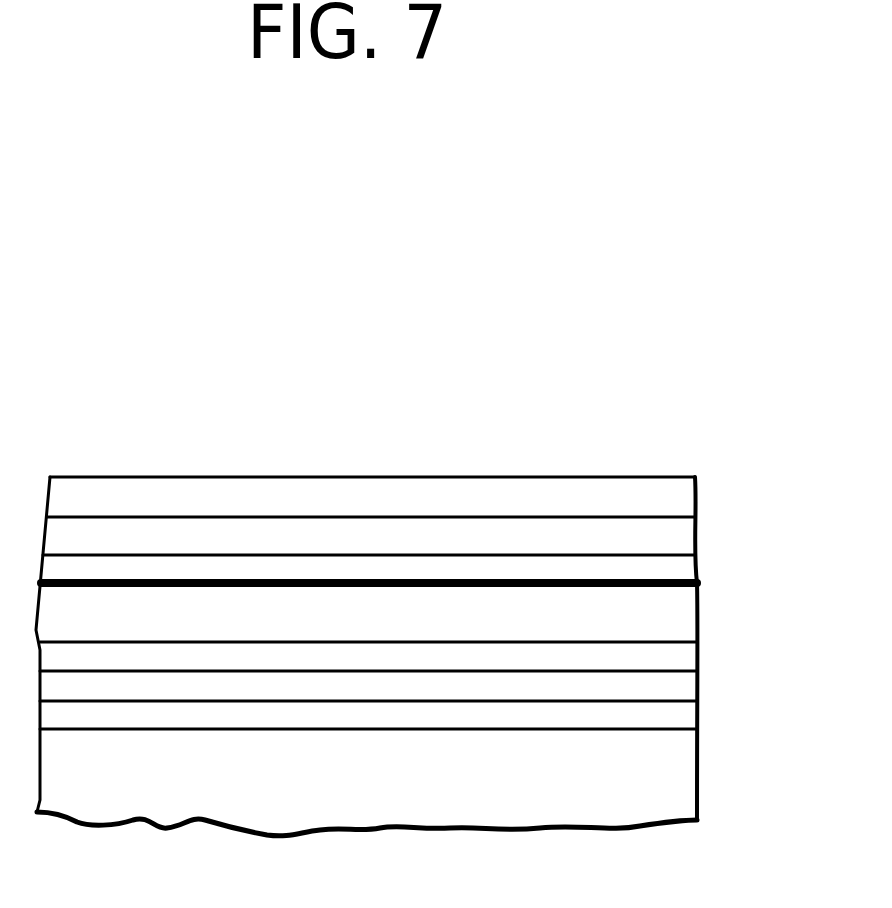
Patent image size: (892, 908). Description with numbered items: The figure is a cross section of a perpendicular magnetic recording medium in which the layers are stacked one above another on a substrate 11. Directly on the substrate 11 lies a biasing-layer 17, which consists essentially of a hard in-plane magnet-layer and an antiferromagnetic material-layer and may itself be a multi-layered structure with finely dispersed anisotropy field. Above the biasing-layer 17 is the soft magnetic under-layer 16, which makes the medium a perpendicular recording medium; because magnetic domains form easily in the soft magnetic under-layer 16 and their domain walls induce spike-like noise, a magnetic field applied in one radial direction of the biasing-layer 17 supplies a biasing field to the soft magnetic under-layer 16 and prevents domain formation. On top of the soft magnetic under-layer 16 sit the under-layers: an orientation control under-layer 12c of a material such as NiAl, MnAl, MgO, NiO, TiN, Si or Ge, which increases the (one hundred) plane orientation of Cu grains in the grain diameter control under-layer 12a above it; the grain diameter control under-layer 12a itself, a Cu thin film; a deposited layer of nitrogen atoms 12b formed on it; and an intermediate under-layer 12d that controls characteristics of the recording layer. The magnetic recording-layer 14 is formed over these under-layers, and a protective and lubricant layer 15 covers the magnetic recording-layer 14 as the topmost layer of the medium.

The substrate 11 is at (597, 810).
The grain diameter control under-layer 12a is at (678, 625).
The deposited layer of nitrogen atoms 12b is at (697, 585).
The orientation control under-layer 12c is at (680, 665).
The intermediate under-layer 12d is at (673, 575).
The magnetic recording-layer 14 is at (690, 540).
The protective and lubricant layer 15 is at (273, 497).
The soft magnetic under-layer 16 is at (668, 718).
The biasing-layer 17 is at (700, 727).